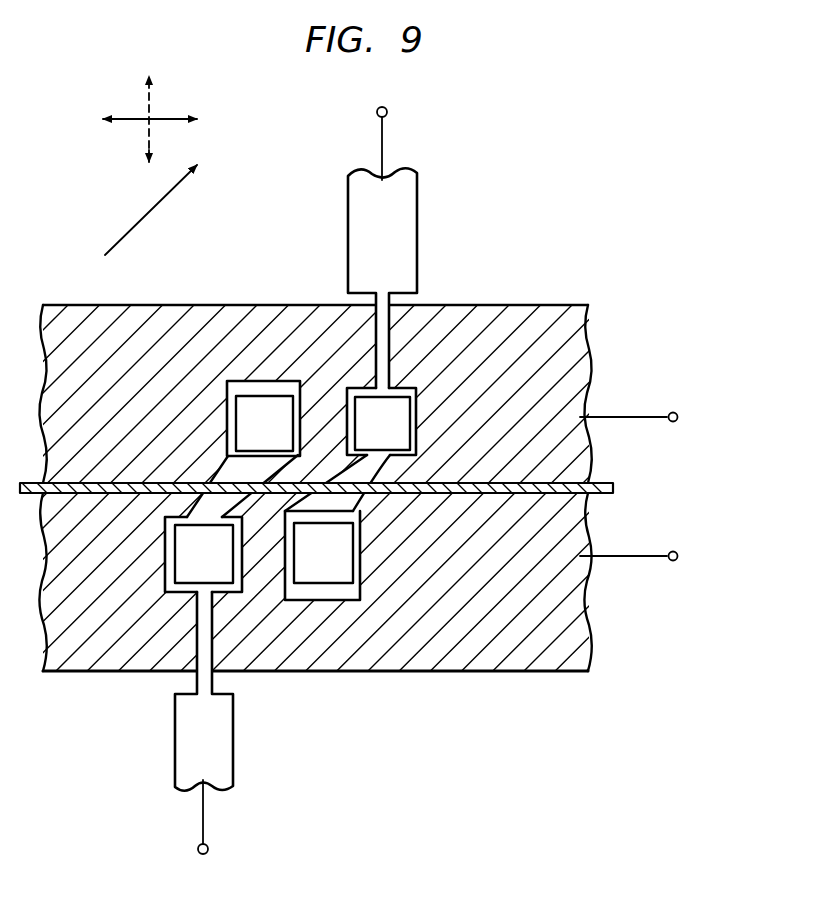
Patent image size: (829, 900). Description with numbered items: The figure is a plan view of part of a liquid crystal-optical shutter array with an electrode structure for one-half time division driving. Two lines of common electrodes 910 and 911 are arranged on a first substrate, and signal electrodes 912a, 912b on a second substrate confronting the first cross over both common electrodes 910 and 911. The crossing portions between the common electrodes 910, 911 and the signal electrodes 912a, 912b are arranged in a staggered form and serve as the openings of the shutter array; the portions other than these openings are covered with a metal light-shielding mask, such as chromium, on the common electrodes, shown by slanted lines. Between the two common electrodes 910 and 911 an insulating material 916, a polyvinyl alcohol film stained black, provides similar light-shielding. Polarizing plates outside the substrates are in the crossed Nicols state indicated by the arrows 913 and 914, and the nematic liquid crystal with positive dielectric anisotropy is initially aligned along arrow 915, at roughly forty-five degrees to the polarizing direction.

The common electrode 910 is at (565, 333).
The common electrode 911 is at (575, 632).
The signal electrode 912a is at (416, 234).
The signal electrode 912b is at (237, 739).
The arrow indicating polarizing direction 913 is at (177, 118).
The arrow indicating polarizing direction 914 is at (152, 98).
The arrow indicating initial alignment direction 915 is at (125, 235).
The insulating material 916 is at (597, 482).